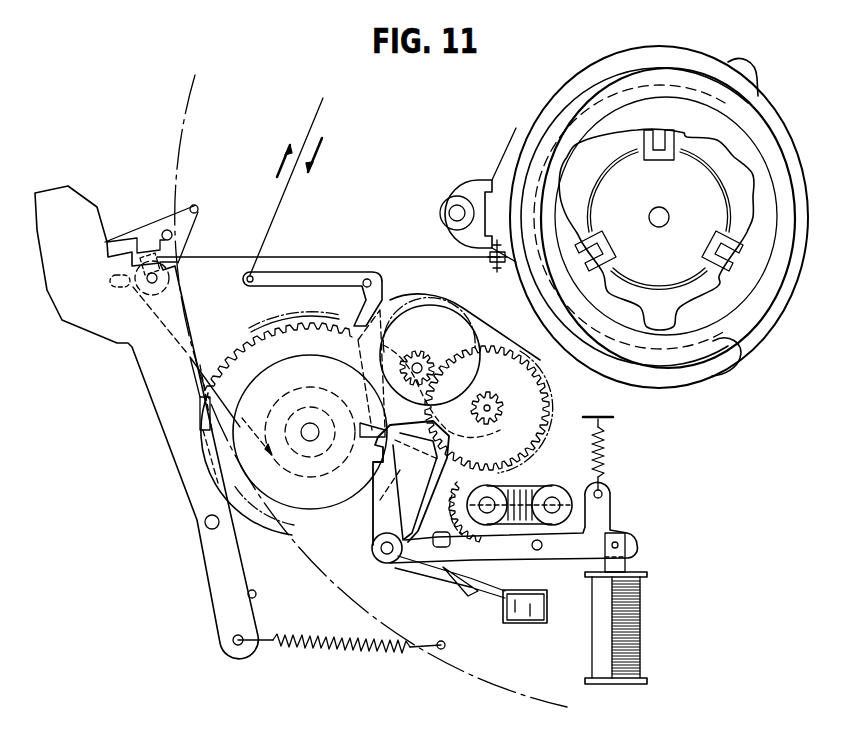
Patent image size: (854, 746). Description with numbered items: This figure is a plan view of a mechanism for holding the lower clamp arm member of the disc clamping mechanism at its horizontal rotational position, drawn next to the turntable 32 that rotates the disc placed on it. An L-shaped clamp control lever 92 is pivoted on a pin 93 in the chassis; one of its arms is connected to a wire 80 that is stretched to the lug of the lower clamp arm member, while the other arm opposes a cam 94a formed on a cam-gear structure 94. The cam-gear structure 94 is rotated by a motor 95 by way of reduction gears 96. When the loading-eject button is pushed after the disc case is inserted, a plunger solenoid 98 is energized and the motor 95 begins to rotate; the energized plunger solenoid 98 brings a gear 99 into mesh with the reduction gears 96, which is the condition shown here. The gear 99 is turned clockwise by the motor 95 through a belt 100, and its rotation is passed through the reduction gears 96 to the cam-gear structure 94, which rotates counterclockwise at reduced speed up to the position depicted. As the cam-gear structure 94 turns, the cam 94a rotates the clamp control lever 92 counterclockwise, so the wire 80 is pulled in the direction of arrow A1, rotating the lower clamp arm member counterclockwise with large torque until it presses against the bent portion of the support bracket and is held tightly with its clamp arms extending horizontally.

The turntable 32 is at (186, 108).
The wire 80 is at (307, 137).
The clamp control lever 92 is at (315, 270).
The pin 93 is at (372, 283).
The cam-gear structure 94 is at (278, 533).
The cam 94a is at (310, 432).
The motor 95 is at (567, 485).
The reduction gears 96 is at (497, 333).
The plunger solenoid 98 is at (630, 618).
The gear 99 is at (490, 546).
The belt 100 is at (527, 487).